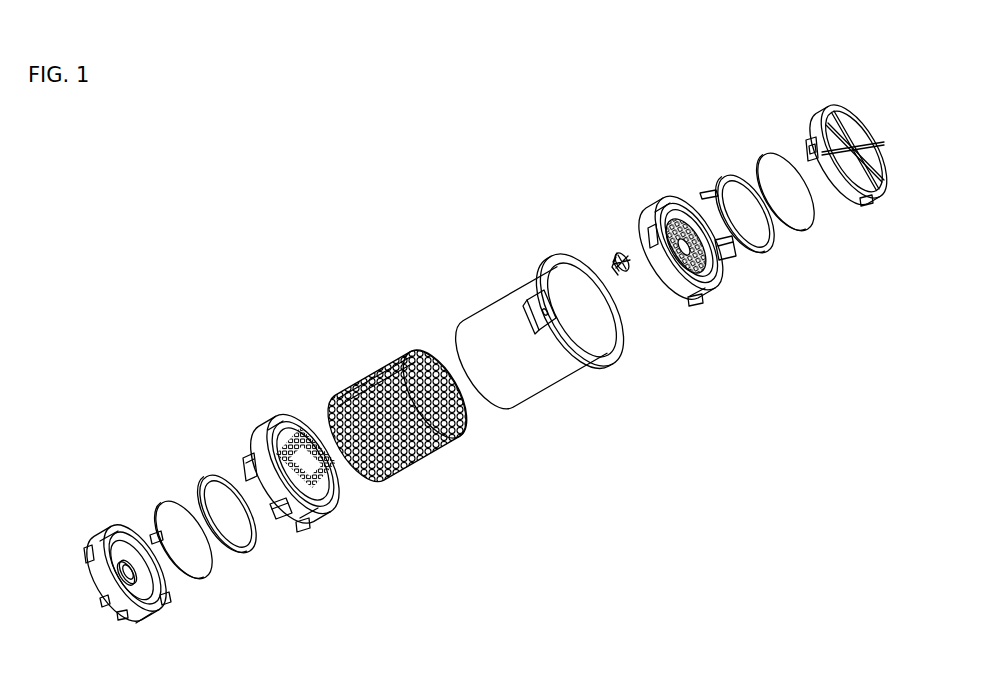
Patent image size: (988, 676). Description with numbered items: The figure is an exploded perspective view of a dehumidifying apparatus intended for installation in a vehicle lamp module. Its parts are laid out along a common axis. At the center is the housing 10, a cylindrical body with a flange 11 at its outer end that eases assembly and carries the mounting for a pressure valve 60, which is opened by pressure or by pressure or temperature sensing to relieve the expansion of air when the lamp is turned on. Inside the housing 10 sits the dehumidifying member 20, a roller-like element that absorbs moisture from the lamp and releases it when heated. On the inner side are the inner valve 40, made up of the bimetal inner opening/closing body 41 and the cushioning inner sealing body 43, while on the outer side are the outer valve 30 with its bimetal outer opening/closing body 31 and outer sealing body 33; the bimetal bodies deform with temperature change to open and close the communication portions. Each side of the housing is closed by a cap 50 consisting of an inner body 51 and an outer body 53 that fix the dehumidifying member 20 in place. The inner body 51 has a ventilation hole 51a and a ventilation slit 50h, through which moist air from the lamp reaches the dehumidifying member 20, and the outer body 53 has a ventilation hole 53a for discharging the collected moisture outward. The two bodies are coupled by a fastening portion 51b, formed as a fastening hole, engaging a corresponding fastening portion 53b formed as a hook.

The housing 10 is at (478, 295).
The flange 11 is at (530, 292).
The dehumidifying member 20 is at (387, 352).
The outer valve 30 is at (767, 62).
The outer opening/closing body 31 is at (773, 154).
The outer sealing body 33 is at (728, 177).
The inner valve 40 is at (204, 386).
The inner opening/closing body 41 is at (167, 500).
The inner sealing body 43 is at (213, 472).
The cap 50 is at (95, 538).
The ventilation slit 50h is at (281, 500).
The inner body 51 is at (295, 418).
The ventilation hole 51a is at (326, 502).
The fastening portion 51b is at (243, 458).
The outer body 53 is at (83, 523).
The ventilation hole 53a is at (122, 553).
The fastening portion 53b is at (86, 566).
The pressure valve 60 is at (612, 253).